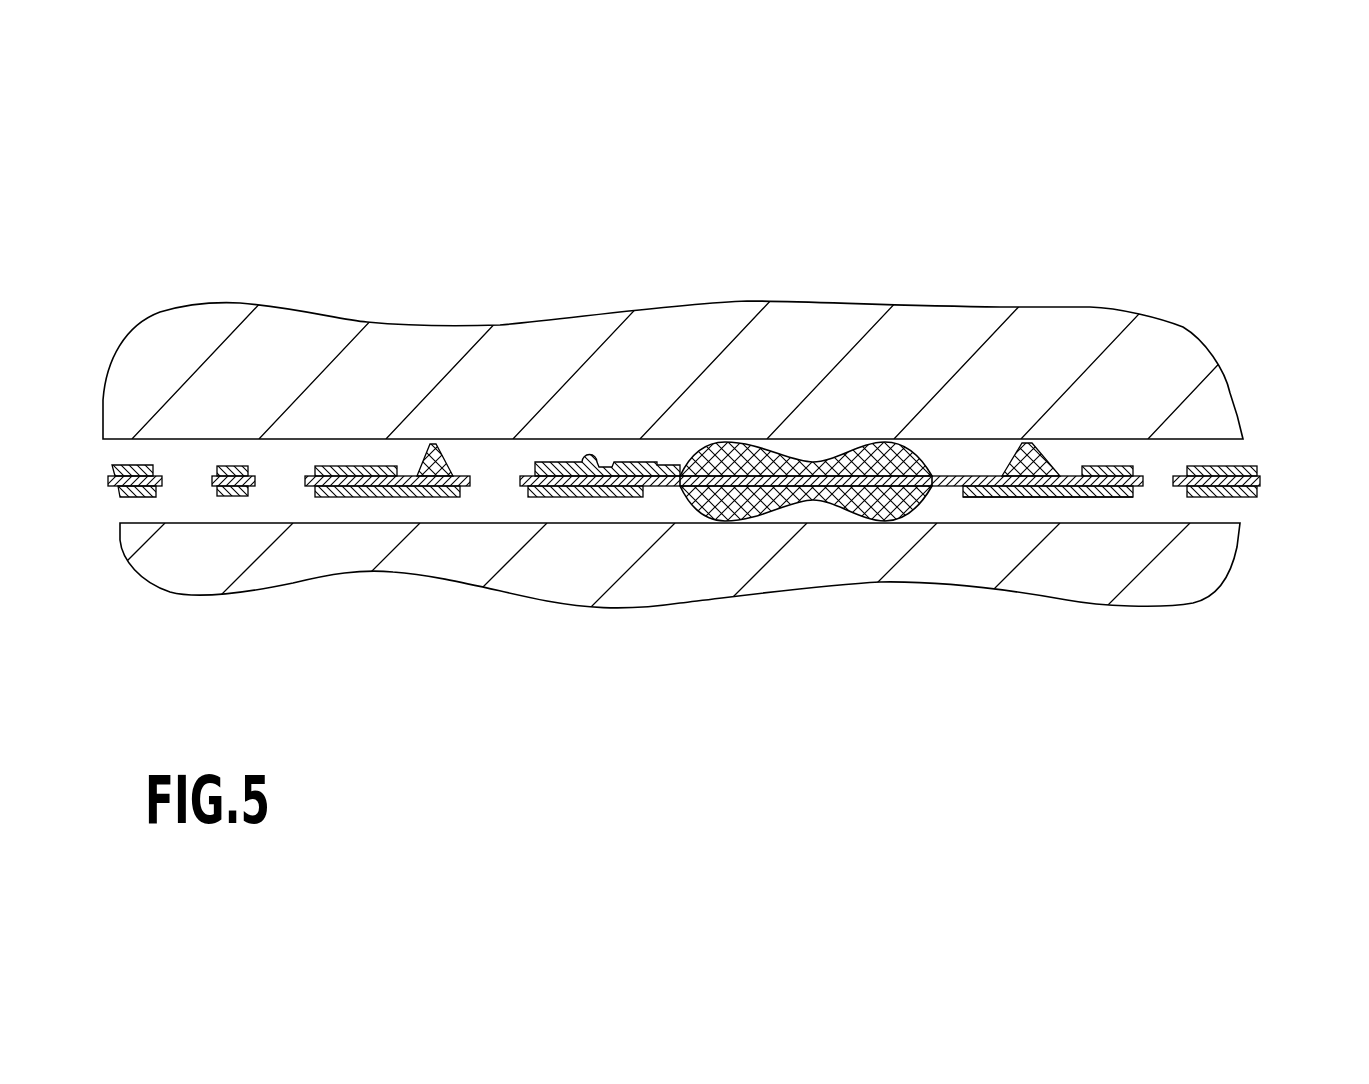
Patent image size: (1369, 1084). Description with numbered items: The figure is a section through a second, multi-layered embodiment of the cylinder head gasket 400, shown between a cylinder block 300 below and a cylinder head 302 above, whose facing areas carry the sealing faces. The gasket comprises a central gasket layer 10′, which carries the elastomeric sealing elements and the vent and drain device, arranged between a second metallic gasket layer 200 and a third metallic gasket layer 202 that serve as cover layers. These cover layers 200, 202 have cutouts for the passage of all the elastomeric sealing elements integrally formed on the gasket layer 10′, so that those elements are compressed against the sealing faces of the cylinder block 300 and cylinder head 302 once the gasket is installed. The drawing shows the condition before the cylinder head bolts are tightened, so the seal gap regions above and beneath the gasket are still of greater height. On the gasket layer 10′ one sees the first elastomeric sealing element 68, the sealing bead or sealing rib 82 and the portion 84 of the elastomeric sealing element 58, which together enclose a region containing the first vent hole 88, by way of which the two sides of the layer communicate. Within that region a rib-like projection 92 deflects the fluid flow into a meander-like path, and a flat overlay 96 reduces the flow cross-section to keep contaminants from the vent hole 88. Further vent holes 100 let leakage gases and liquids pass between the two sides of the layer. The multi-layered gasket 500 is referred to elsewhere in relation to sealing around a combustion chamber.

The second metallic gasket layer 200 is at (130, 465).
The cylinder head 302 is at (427, 357).
The cylinder block 300 is at (357, 550).
The third metallic gasket layer 202 is at (133, 497).
The further vent holes 100 is at (182, 480).
The first vent hole 88 is at (497, 480).
The sealing bead or sealing rib 82 is at (445, 455).
The flat overlay 96 is at (556, 478).
The projection 92 is at (595, 458).
The portion of the elastomeric sealing element 84 is at (720, 440).
The elastomeric sealing element 58 is at (897, 440).
The first elastomeric sealing element 68 is at (1032, 444).
The gasket layer 10′ is at (960, 482).
The multi-layered cylinder head gasket 500 is at (979, 521).
The cylinder head gasket 400 is at (1286, 461).